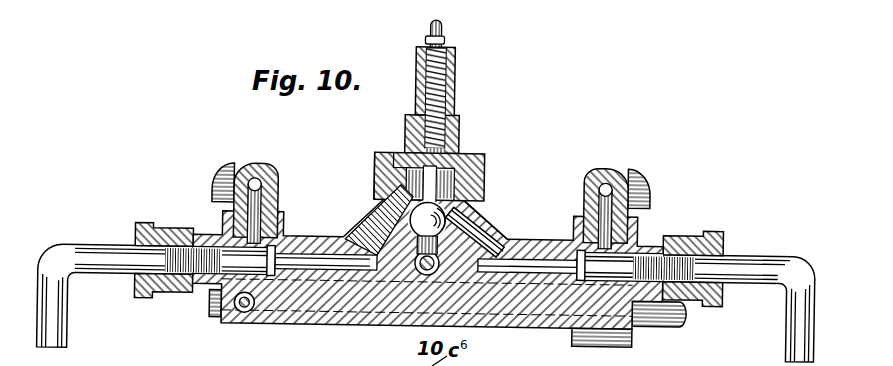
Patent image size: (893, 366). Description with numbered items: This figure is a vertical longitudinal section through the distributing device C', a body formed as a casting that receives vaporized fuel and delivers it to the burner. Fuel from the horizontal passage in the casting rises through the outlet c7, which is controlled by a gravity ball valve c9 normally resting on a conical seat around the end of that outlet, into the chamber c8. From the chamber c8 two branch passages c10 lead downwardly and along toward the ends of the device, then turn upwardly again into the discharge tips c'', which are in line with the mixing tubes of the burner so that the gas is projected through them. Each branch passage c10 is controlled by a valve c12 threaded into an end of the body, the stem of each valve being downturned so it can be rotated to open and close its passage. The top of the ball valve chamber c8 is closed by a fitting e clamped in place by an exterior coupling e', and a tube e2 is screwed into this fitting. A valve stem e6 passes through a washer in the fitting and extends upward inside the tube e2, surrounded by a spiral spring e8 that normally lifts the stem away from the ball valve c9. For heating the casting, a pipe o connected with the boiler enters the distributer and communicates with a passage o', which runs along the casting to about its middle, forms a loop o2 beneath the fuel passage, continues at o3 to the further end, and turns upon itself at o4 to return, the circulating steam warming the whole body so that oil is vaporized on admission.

The discharge tip c'' is at (430, 195).
The valve c12 is at (280, 238).
The branch passage c10 is at (380, 233).
The chamber c8 is at (474, 182).
The gravity ball valve c9 is at (458, 212).
The outlet c7 is at (498, 236).
The fitting e is at (442, 134).
The exterior coupling e' is at (377, 175).
The tube e2 is at (450, 72).
The valve stem e6 is at (439, 30).
The spiral spring e8 is at (451, 43).
The pipe o is at (426, 291).
The passage o' is at (589, 337).
The loop o2 is at (455, 313).
The passage continuation o3 is at (310, 308).
The turn of passage o4 is at (243, 307).
The distributing device C' is at (428, 280).